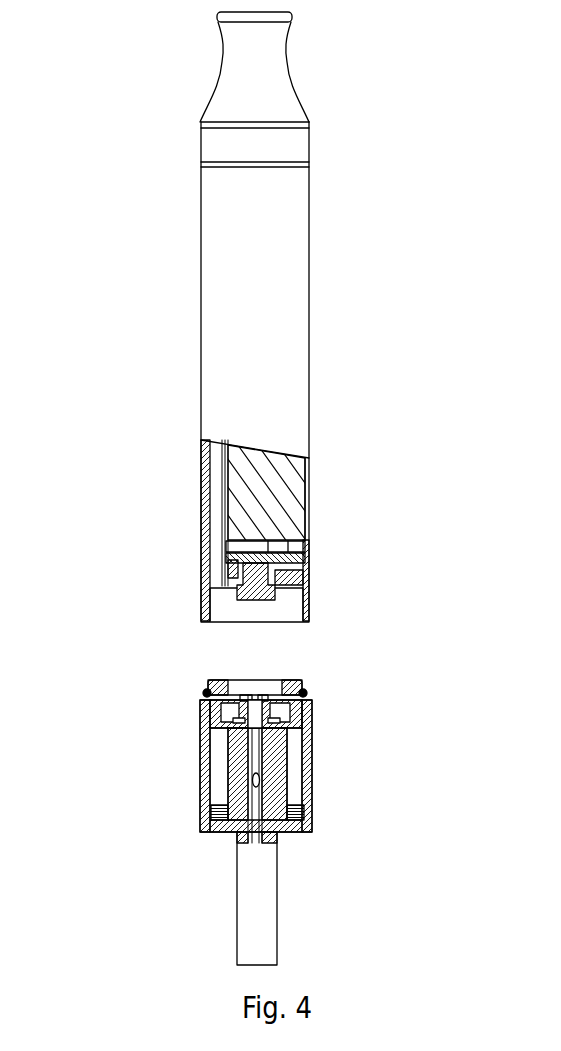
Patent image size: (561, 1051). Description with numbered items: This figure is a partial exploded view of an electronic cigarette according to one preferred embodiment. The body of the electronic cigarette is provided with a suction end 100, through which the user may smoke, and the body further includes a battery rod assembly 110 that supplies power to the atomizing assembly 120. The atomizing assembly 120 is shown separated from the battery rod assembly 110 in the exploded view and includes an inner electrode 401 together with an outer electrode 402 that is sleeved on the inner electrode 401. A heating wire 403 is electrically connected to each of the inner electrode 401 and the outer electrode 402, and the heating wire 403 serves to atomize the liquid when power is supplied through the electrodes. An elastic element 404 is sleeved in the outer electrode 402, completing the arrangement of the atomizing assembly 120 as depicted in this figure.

The suction end 100 is at (284, 86).
The battery rod assembly 110 is at (296, 303).
The atomizing assembly 120 is at (315, 769).
The inner electrode 401 is at (267, 696).
The outer electrode 402 is at (309, 741).
The heating wire 403 is at (251, 781).
The elastic element 404 is at (231, 691).